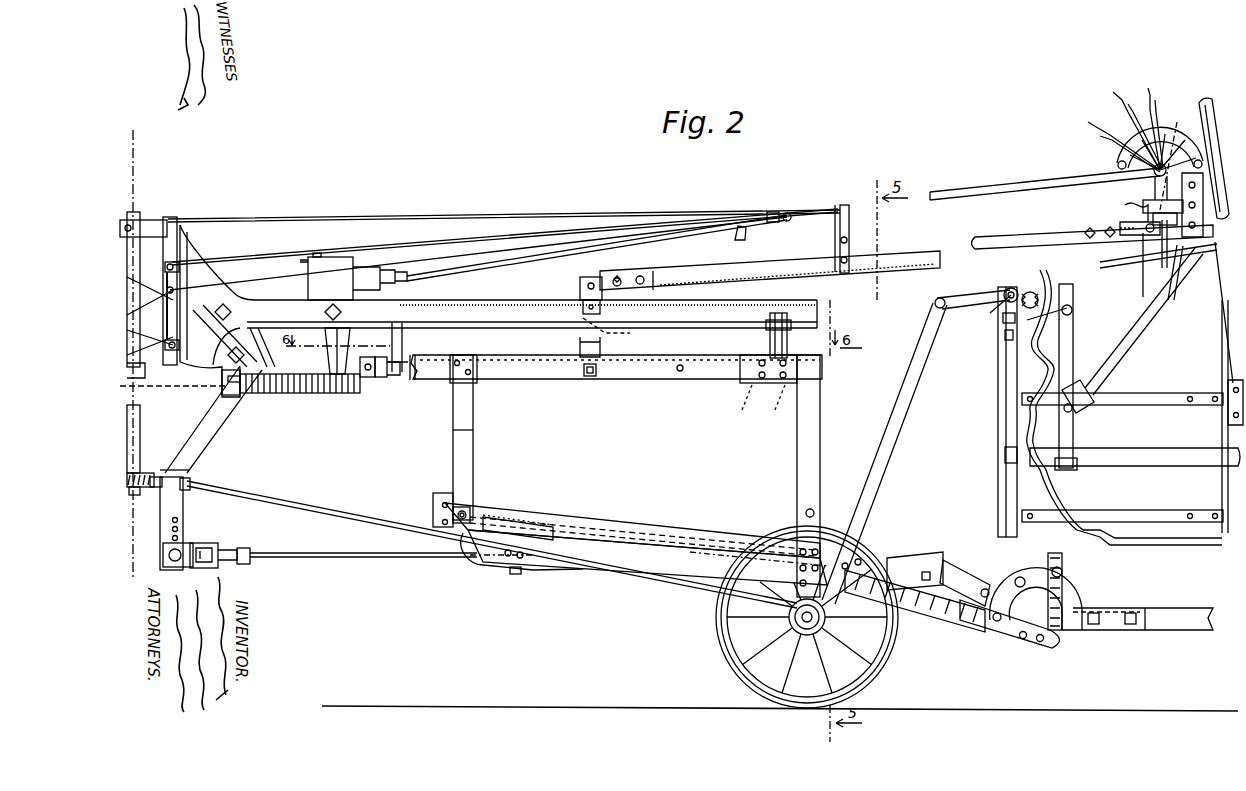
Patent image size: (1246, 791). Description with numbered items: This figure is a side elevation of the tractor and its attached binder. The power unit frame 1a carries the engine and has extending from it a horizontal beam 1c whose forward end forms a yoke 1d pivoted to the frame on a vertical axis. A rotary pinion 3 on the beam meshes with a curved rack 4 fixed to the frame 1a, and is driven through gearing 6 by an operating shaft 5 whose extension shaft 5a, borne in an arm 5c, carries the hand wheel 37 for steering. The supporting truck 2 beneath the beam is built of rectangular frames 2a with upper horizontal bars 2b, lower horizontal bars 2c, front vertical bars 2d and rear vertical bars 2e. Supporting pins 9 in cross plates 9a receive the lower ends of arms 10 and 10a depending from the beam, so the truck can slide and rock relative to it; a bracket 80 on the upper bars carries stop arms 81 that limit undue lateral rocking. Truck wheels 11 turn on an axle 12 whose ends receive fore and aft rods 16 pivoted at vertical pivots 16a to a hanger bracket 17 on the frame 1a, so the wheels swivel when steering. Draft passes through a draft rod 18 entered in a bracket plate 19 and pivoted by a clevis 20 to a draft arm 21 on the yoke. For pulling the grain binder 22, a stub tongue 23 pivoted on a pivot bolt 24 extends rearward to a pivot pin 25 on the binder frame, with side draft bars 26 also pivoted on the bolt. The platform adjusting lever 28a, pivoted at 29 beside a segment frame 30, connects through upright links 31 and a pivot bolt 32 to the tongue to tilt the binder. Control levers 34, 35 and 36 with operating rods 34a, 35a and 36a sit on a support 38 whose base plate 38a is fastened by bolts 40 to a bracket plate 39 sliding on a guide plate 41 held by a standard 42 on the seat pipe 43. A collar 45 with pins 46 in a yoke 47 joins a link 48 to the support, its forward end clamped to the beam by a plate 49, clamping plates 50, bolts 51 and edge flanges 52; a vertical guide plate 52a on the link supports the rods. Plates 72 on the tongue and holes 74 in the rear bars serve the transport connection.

The frame 1a is at (168, 265).
The horizontal beam 1c is at (510, 310).
The yoke 1d is at (208, 262).
The supporting truck 2 is at (623, 426).
The upright open rectangular frames 2a is at (483, 437).
The upper horizontal bars 2b is at (545, 385).
The lower horizontal bars 2c is at (633, 555).
The front vertical bars 2d is at (458, 450).
The rear vertical bars 2e is at (797, 452).
The rotary pinion 3 is at (338, 393).
The rack 4 is at (290, 393).
The operating shaft 5 is at (455, 268).
The extension shaft 5a is at (770, 225).
The arm 5c is at (1178, 122).
The gearing 6 is at (335, 285).
The supporting pins 9 is at (375, 380).
The cross plates 9a is at (366, 382).
The front arm 10 is at (404, 345).
The rear arm 10a is at (770, 340).
The truck wheels 11 is at (722, 645).
The axle 12 is at (797, 633).
The fore and aft rods 16 is at (320, 503).
The vertical pivots 16a is at (140, 492).
The hanger bracket 17 is at (142, 437).
The draft rod 18 is at (350, 552).
The bracket plate 19 is at (508, 574).
The clevis 20 is at (206, 535).
The draft arm 21 is at (205, 433).
The grain binder 22 is at (1120, 389).
The stub tongue 23 is at (585, 522).
The pivot bolt 24 is at (468, 512).
The pivot pin 25 is at (1010, 615).
The side draft bars 26 is at (537, 520).
The platform adjusting lever 28a is at (1085, 262).
The pivot 29 is at (1005, 300).
The segment frame 30 is at (1025, 292).
The upright links 31 is at (908, 393).
The pivot bolt 32 is at (850, 565).
The clutch control lever 34 is at (1090, 125).
The operating rod 34a is at (505, 233).
The gear shift control lever 35 is at (1116, 92).
The operating rod 35a is at (571, 216).
The gas control lever 36 is at (1148, 88).
The operating rod 36a is at (433, 280).
The hand wheel 37 is at (1196, 95).
The support 38 is at (1195, 162).
The base plate 38a is at (1155, 200).
The bracket plate 39 is at (1166, 255).
The fastening bolts 40 is at (1176, 257).
The guide plate 41 is at (1127, 258).
The standard 42 is at (1073, 348).
The seat pipe 43 is at (1168, 455).
The collar 45 is at (1120, 210).
The pins 46 is at (1143, 270).
The yoke 47 is at (1120, 230).
The link 48 is at (897, 264).
The plate 49 is at (583, 290).
The clamping plates 50 is at (583, 318).
The bolts 51 is at (612, 331).
The edge flanges 52 is at (672, 305).
The vertical guide plate 52a is at (846, 205).
The plates 72 is at (977, 590).
The holes 74 is at (806, 511).
The bracket 80 is at (580, 347).
The stop arms 81 is at (593, 337).